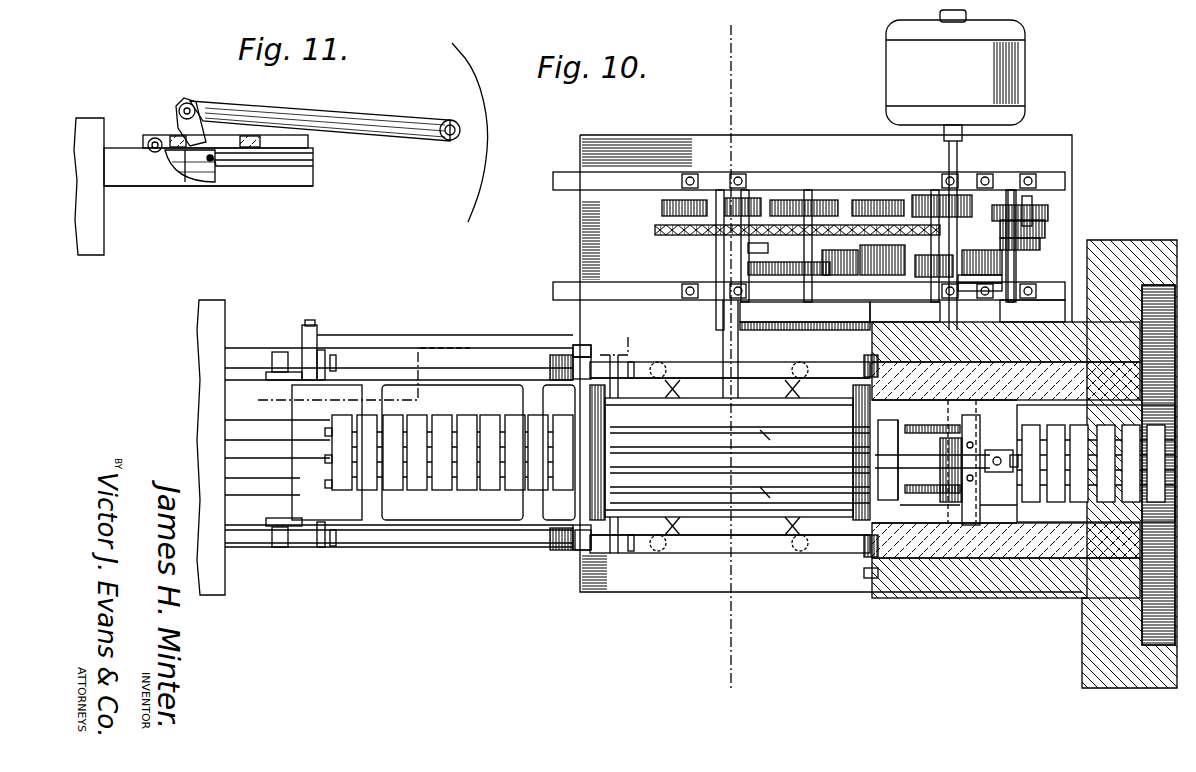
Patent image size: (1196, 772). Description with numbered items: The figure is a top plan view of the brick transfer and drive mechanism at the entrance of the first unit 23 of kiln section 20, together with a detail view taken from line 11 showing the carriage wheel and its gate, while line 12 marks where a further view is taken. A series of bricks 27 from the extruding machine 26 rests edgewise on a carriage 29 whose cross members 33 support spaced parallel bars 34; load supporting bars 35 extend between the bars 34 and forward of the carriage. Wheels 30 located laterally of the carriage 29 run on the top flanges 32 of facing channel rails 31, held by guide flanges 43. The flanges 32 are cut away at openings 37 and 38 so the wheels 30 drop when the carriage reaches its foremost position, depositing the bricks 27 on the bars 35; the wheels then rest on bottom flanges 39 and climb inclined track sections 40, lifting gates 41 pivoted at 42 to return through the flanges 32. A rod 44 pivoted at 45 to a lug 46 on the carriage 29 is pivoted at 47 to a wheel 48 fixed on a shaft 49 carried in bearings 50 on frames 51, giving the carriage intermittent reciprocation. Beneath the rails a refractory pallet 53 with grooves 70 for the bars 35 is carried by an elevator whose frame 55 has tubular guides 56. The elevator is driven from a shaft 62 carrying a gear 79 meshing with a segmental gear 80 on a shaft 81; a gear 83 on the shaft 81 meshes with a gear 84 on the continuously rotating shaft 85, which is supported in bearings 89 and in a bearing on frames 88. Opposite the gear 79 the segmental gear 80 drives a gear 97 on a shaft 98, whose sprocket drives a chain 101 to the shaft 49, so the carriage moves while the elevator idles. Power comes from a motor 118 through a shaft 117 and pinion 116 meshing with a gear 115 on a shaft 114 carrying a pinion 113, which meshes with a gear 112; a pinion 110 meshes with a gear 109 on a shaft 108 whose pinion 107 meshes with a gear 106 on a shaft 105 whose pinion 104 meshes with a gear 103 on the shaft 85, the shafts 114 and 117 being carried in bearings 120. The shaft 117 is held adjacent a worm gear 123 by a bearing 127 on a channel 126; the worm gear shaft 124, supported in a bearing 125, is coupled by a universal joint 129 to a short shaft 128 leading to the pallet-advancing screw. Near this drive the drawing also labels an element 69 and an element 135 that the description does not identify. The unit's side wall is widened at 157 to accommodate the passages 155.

In FIG. 10, the section line 11 is at (261, 394).
In FIG. 10, the section line 12 is at (731, 28).
In FIG. 10, the kiln section 20 is at (1005, 598).
In FIG. 10, the first unit 23 is at (1055, 600).
In FIG. 11, the extruding machine 26 is at (97, 114).
In FIG. 10, the extruding machine 26 is at (226, 295).
In FIG. 10, the bricks 27 is at (1100, 430).
In FIG. 11, the carriage 29 is at (285, 135).
In FIG. 10, the carriage 29 is at (440, 530).
In FIG. 11, the wheels 30 is at (152, 152).
In FIG. 10, the wheels 30 is at (274, 352).
In FIG. 11, the rails 31 is at (305, 176).
In FIG. 10, the rails 31 is at (445, 348).
In FIG. 11, the top flanges 32 is at (313, 156).
In FIG. 10, the top flanges 32 is at (476, 368).
In FIG. 10, the cross members 33 is at (382, 505).
In FIG. 10, the bars 34 is at (325, 488).
In FIG. 10, the load supporting bars 35 is at (240, 420).
In FIG. 10, the opening 37 is at (558, 355).
In FIG. 10, the opening 38 is at (864, 365).
In FIG. 11, the bottom flanges 39 is at (290, 187).
In FIG. 11, the inclined track sections 40 is at (198, 175).
In FIG. 11, the gates 41 is at (178, 162).
In FIG. 10, the gates 41 is at (324, 350).
In FIG. 11, the pivot 42 is at (212, 165).
In FIG. 10, the pivot 42 is at (336, 358).
In FIG. 10, the guide flanges 43 is at (500, 352).
In FIG. 11, the rod 44 is at (352, 115).
In FIG. 10, the rod 44 is at (408, 335).
In FIG. 11, the pivotal connection 45 is at (190, 103).
In FIG. 10, the pivotal connection 45 is at (310, 320).
In FIG. 11, the lug 46 is at (176, 114).
In FIG. 10, the lug 46 is at (300, 352).
In FIG. 11, the pivotal connection 47 is at (440, 140).
In FIG. 10, the pivotal connection 47 is at (586, 345).
In FIG. 11, the wheel 48 is at (462, 185).
In FIG. 10, the wheel 48 is at (632, 332).
In FIG. 10, the shaft 49 is at (714, 268).
In FIG. 10, the bearings 50 is at (708, 185).
In FIG. 10, the frames 51 is at (570, 180).
In FIG. 10, the refractory pallet 53 is at (738, 510).
In FIG. 10, the frame 55 is at (682, 390).
In FIG. 10, the tubular guides 56 is at (665, 366).
In FIG. 10, the shaft 62 is at (716, 250).
In FIG. 10, the plate 69 is at (888, 460).
In FIG. 10, the grooves 70 is at (790, 438).
In FIG. 10, the gear 79 is at (660, 208).
In FIG. 10, the segmental gear 80 is at (750, 198).
In FIG. 10, the shaft 81 is at (790, 248).
In FIG. 10, the gear 83 is at (775, 276).
In FIG. 10, the gear 84 is at (888, 288).
In FIG. 10, the shaft 85 is at (860, 320).
In FIG. 10, the frames 88 is at (1042, 306).
In FIG. 10, the bearings 89 is at (865, 575).
In FIG. 10, the gear 97 is at (810, 198).
In FIG. 10, the shaft 98 is at (858, 290).
In FIG. 10, the chain 101 is at (786, 200).
In FIG. 10, the gear 103 is at (833, 260).
In FIG. 10, the pinion 104 is at (930, 268).
In FIG. 10, the shaft 105 is at (915, 308).
In FIG. 10, the gear 106 is at (930, 215).
In FIG. 10, the pinion 107 is at (972, 278).
In FIG. 10, the shaft 108 is at (972, 288).
In FIG. 10, the gear 109 is at (975, 258).
In FIG. 10, the pinion 110 is at (1020, 255).
In FIG. 10, the gear 112 is at (1050, 228).
In FIG. 10, the pinion 113 is at (1025, 244).
In FIG. 10, the shaft 114 is at (1030, 208).
In FIG. 10, the gear 115 is at (1035, 212).
In FIG. 10, the pinion 116 is at (948, 190).
In FIG. 10, the shaft 117 is at (960, 168).
In FIG. 10, the motor 118 is at (1012, 50).
In FIG. 10, the bearings 120 is at (1012, 192).
In FIG. 10, the worm gear 123 is at (942, 466).
In FIG. 10, the shaft 124 is at (958, 505).
In FIG. 10, the bearing 125 is at (975, 448).
In FIG. 10, the channel 126 is at (978, 425).
In FIG. 10, the bearing 127 is at (950, 425).
In FIG. 10, the short shaft 128 is at (990, 472).
In FIG. 10, the universal joint 129 is at (995, 505).
In FIG. 10, the plate 135 is at (905, 487).
In FIG. 10, the passages 155 is at (1158, 300).
In FIG. 10, the widened side wall 157 is at (1120, 240).